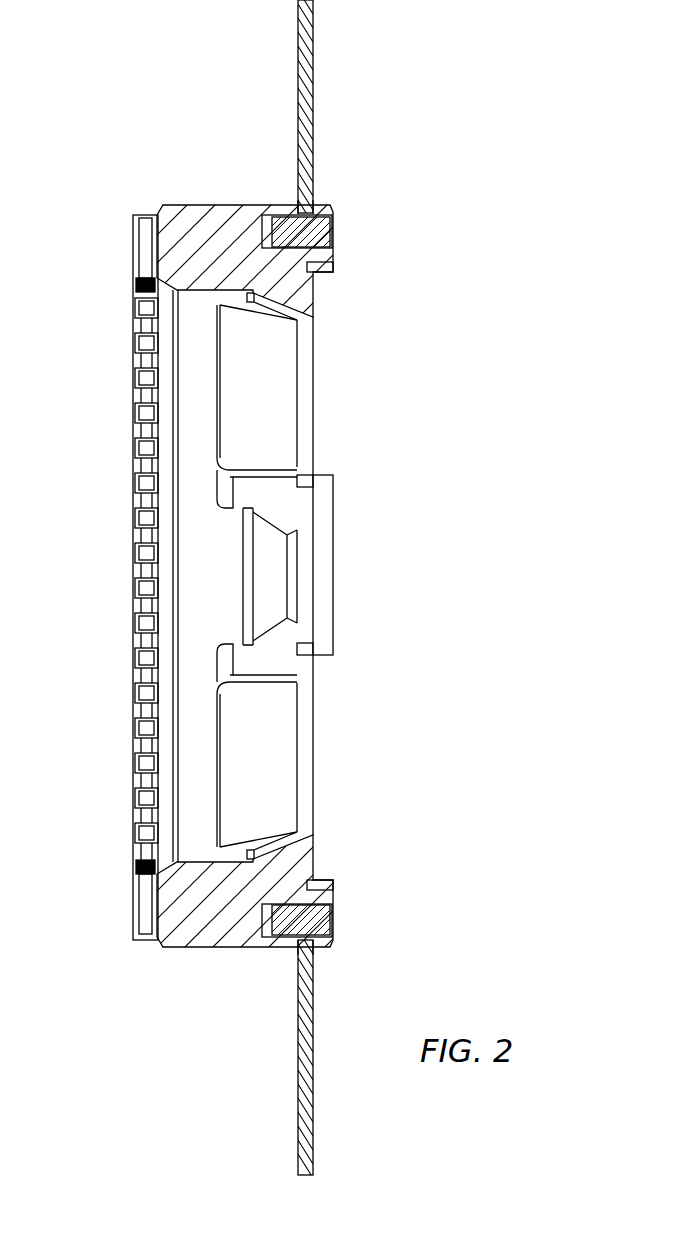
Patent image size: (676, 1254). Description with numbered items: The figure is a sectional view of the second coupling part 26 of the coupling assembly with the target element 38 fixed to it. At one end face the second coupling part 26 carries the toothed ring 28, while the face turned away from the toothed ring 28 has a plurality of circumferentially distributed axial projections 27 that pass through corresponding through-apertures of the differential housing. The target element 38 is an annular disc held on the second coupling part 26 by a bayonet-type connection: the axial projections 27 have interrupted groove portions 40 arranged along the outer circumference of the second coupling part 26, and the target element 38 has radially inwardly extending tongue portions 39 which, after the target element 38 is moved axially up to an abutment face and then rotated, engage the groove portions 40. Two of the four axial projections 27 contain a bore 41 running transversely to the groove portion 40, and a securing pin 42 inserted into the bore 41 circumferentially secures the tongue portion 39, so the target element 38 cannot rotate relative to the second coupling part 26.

The second coupling part 26 is at (215, 205).
The axial projections 27 is at (333, 268).
The toothed ring 28 is at (133, 262).
The target element 38 is at (315, 100).
The tongue portions 39 is at (300, 207).
The groove portions 40 is at (313, 207).
The bore 41 is at (333, 226).
The securing pin 42 is at (333, 246).